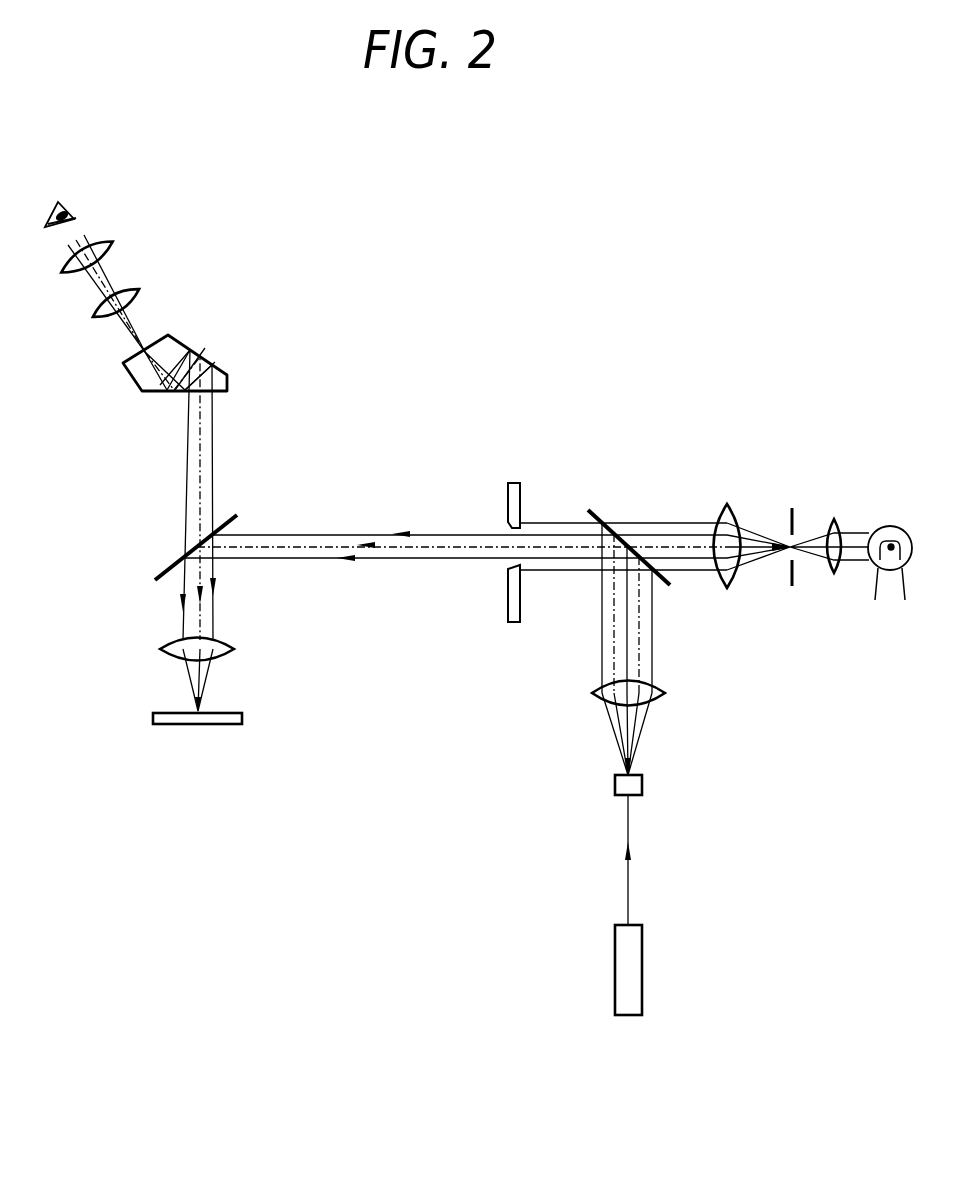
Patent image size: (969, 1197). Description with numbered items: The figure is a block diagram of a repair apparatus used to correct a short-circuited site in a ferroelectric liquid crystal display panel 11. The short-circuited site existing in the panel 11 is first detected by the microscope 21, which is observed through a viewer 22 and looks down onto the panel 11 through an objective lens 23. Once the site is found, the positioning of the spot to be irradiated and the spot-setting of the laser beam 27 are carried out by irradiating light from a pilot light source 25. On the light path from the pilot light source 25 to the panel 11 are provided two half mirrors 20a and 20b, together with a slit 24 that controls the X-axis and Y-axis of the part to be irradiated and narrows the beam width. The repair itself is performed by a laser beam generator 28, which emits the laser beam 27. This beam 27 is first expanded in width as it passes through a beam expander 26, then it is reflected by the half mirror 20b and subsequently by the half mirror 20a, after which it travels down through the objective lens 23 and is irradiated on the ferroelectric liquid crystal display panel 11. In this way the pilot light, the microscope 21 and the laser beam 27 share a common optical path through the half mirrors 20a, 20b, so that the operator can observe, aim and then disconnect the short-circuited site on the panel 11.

The ferroelectric liquid crystal display panel 11 is at (188, 727).
The half mirror 20a is at (237, 511).
The half mirror 20b is at (598, 512).
The microscope 21 is at (226, 371).
The viewer 22 is at (72, 204).
The objective lens 23 is at (234, 645).
The slit 24 is at (517, 480).
The pilot light source 25 is at (882, 528).
The beam expander 26 is at (642, 730).
The laser beam 27 is at (630, 883).
The laser beam generator 28 is at (642, 980).